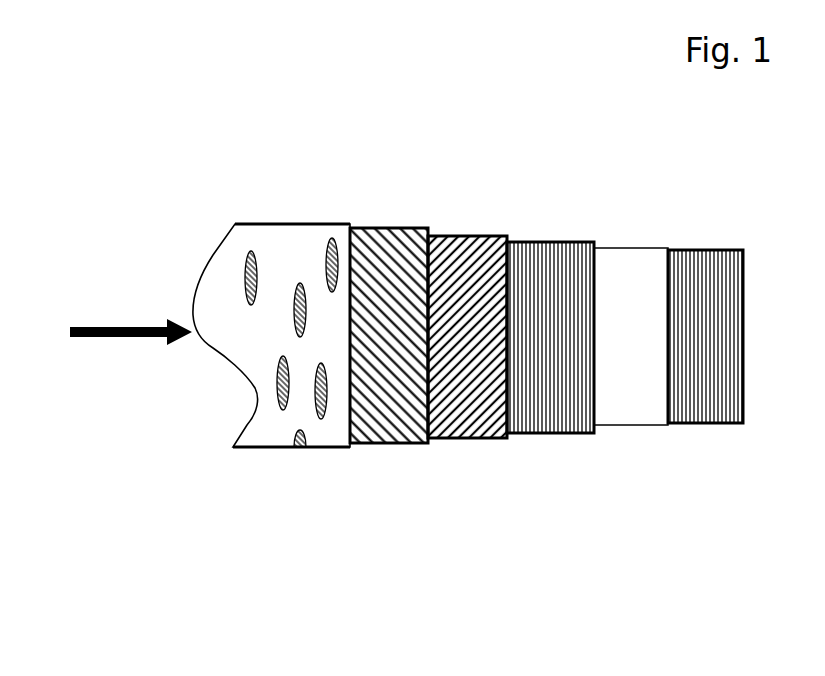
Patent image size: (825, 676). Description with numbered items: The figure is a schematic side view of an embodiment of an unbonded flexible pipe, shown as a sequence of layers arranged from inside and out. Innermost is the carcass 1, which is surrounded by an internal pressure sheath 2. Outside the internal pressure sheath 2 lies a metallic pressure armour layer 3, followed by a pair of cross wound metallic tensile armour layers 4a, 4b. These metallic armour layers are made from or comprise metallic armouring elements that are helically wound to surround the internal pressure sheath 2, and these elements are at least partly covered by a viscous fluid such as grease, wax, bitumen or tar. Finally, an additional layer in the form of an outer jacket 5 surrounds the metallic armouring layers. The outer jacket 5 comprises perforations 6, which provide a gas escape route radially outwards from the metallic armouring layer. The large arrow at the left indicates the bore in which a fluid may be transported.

The carcass 1 is at (715, 402).
The internal pressure sheath 2 is at (635, 402).
The metallic pressure armour layer 3 is at (557, 405).
The cross wound metallic tensile armour layer 4a is at (463, 250).
The cross wound metallic tensile armour layer 4b is at (383, 250).
The outer jacket 5 is at (285, 245).
The perforations 6 is at (315, 393).